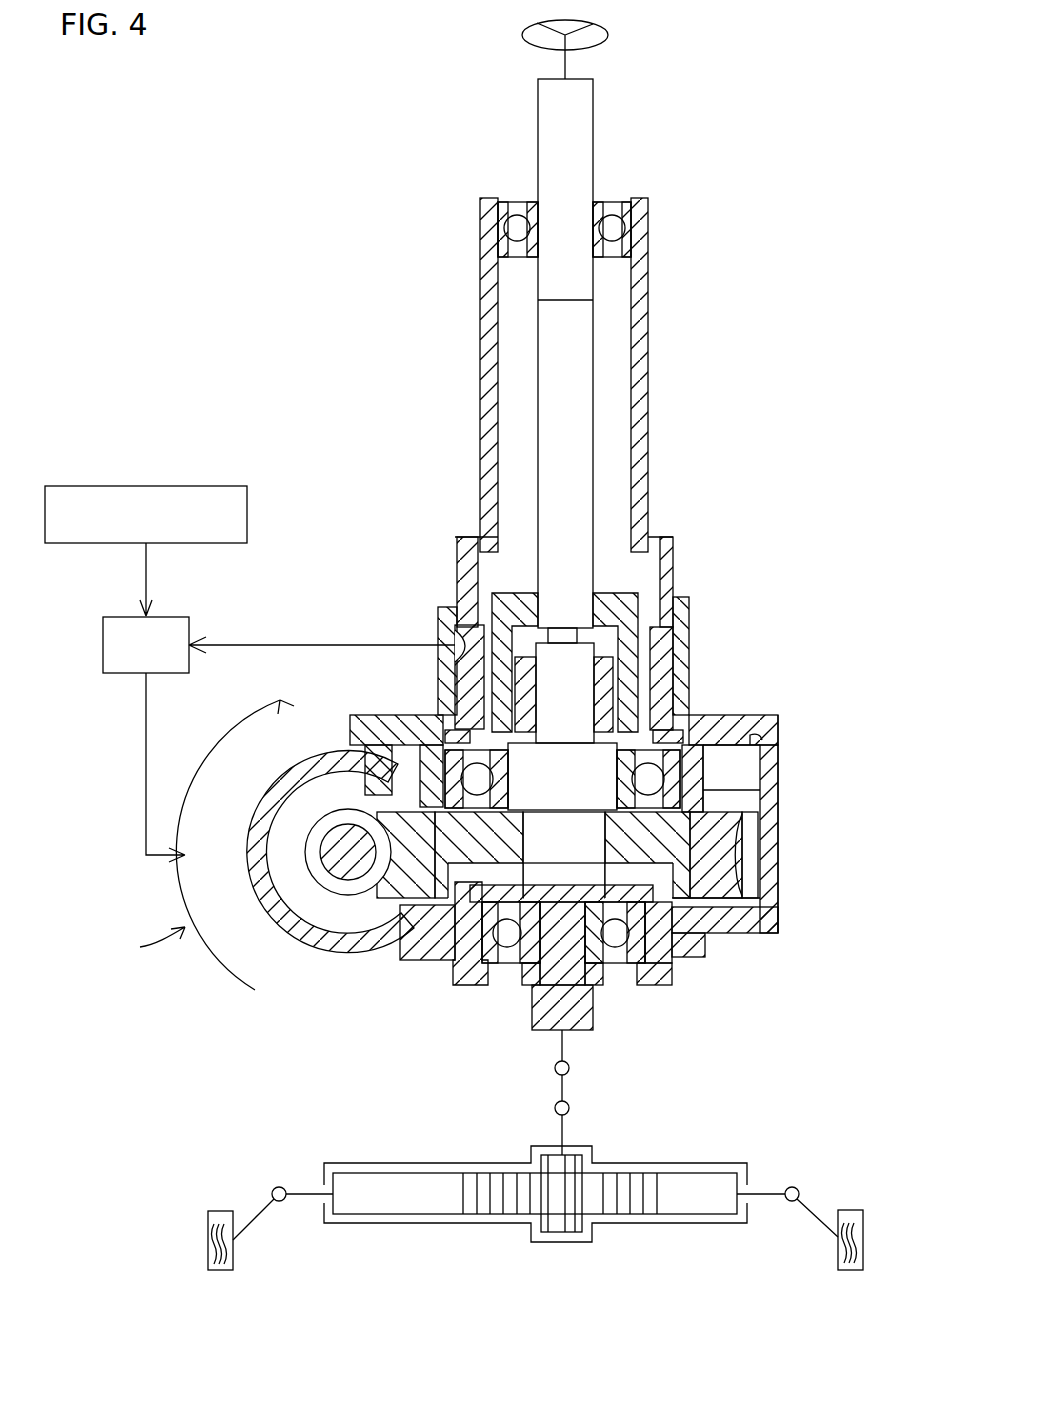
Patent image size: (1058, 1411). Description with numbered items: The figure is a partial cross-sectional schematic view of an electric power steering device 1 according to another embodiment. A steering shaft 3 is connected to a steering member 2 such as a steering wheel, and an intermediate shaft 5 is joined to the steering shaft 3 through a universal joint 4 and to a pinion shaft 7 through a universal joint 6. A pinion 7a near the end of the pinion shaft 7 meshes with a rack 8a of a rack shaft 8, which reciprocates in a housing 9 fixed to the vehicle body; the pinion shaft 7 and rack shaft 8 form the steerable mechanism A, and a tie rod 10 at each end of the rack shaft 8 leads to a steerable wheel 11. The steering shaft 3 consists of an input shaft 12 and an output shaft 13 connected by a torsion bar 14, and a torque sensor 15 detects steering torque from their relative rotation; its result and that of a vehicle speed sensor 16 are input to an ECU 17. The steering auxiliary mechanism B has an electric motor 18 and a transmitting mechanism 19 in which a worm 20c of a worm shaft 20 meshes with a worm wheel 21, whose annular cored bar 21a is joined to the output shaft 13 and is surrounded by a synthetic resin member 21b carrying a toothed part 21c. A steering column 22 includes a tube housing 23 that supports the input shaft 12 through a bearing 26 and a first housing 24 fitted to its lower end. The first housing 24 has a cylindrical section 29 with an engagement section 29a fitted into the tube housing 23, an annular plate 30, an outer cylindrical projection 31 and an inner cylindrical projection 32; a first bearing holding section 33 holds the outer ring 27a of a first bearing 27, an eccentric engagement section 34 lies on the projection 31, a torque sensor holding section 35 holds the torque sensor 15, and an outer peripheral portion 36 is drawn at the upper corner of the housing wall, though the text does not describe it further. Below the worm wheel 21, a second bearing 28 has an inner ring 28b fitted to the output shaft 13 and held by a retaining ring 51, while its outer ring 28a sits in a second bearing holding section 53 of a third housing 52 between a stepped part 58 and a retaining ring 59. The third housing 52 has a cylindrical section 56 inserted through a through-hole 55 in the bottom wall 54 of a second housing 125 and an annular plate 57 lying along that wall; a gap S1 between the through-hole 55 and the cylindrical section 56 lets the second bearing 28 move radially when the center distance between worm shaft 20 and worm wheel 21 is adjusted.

The electric power steering device 1 is at (589, 324).
The steering member 2 is at (522, 38).
The steering shaft 3 is at (608, 134).
The universal joint 4 is at (570, 1068).
The intermediate shaft 5 is at (560, 1092).
The universal joint 6 is at (570, 1108).
The pinion shaft 7 is at (536, 1208).
The pinion 7a is at (568, 1234).
The rack shaft 8 is at (535, 1234).
The rack 8a is at (510, 1205).
The housing 9 is at (430, 1163).
The tie rod 10 is at (250, 1218).
The steerable wheel 11 is at (225, 1211).
The input shaft 12 is at (577, 309).
The output shaft 13 is at (566, 954).
The torsion bar 14 is at (567, 638).
The torque sensor 15 is at (668, 641).
The vehicle speed sensor 16 is at (177, 486).
The ECU 17 is at (175, 617).
The electric motor 18 is at (222, 954).
The transmitting mechanism 19 is at (546, 900).
The worm shaft 20 is at (347, 870).
The worm 20c is at (288, 905).
The worm wheel 21 is at (546, 897).
The cored bar 21a is at (622, 838).
The synthetic resin member 21b is at (718, 814).
The toothed part 21c is at (746, 857).
The steering column 22 is at (609, 350).
The tube housing 23 is at (651, 352).
The first housing 24 is at (592, 640).
The bearing 26 is at (517, 224).
The first bearing 27 is at (648, 778).
The outer ring 27a is at (369, 725).
The second bearing 28 is at (557, 938).
The outer ring 28a is at (492, 958).
The inner ring 28b is at (533, 921).
The cylindrical section 29 is at (683, 670).
The engagement section 29a is at (673, 572).
The annular plate 30 is at (588, 788).
The cylindrical projection 31 is at (378, 790).
The cylindrical projection 32 is at (432, 762).
The first bearing holding section 33 is at (703, 796).
The eccentric engagement section 34 is at (778, 762).
The torque sensor holding section 35 is at (466, 652).
The outer peripheral portion 36 is at (760, 742).
The retaining ring 51 is at (599, 981).
The third housing 52 is at (684, 985).
The second bearing holding section 53 is at (632, 903).
The bottom wall 54 is at (642, 889).
The through-hole 55 is at (668, 933).
The cylindrical section 56 is at (470, 990).
The annular plate 57 is at (426, 950).
The stepped part 58 is at (650, 964).
The retaining ring 59 is at (620, 834).
The second housing 125 is at (794, 844).
The steerable mechanism A is at (535, 1212).
The steering auxiliary mechanism B is at (150, 947).
The gap S1 is at (690, 900).